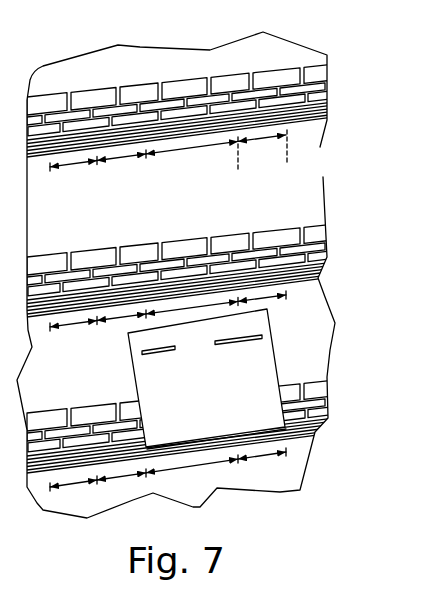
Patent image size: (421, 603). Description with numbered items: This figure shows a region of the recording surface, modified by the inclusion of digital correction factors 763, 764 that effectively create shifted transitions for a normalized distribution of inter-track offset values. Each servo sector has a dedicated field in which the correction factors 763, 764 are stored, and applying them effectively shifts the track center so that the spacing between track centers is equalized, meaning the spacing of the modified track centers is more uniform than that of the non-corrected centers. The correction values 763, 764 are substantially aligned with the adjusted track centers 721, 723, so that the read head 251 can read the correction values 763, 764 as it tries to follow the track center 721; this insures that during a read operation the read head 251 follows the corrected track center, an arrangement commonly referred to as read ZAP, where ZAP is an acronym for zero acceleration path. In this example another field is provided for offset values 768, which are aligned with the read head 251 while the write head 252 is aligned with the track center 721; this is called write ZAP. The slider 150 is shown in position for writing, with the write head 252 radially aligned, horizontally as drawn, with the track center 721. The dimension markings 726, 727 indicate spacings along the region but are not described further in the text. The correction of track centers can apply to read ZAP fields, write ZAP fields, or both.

The digital correction factor 763 is at (330, 108).
The digital correction factor 764 is at (330, 118).
The adjusted track center 723 is at (287, 148).
The end spacing 726 is at (263, 141).
The segment width 727 is at (213, 144).
The track center 721 is at (238, 145).
The offset values 768 is at (157, 298).
The read head 251 is at (143, 350).
The write head 252 is at (262, 338).
The slider 150 is at (229, 412).